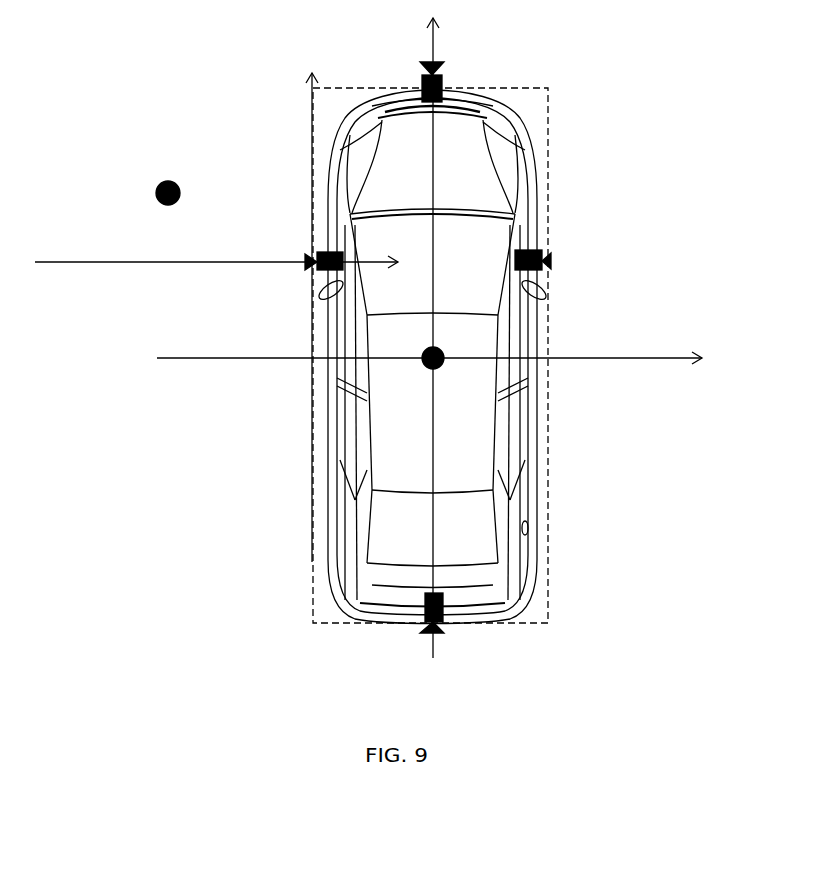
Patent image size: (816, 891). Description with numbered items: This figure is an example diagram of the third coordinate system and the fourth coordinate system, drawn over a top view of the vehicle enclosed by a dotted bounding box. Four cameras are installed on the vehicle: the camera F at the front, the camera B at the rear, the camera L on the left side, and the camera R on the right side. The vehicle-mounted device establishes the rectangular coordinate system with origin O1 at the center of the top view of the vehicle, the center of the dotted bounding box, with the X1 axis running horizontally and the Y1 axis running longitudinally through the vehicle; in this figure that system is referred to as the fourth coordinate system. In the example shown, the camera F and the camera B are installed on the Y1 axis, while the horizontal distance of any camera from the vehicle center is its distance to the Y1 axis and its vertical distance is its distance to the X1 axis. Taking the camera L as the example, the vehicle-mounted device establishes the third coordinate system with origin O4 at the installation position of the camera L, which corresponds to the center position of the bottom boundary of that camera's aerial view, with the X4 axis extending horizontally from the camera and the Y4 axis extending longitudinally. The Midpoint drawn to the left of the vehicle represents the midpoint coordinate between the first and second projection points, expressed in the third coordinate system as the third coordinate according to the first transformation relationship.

The camera F is at (422, 83).
The camera B is at (431, 633).
The camera L is at (303, 263).
The camera R is at (553, 262).
The origin of the fourth coordinate system O1 is at (424, 349).
The origin of the third coordinate system O4 is at (298, 277).
The X1 axis X1 is at (447, 359).
The Y1 axis Y1 is at (448, 334).
The X4 axis X4 is at (226, 249).
The Y4 axis Y4 is at (300, 305).
The midpoint (third coordinate) Midpoint is at (158, 183).